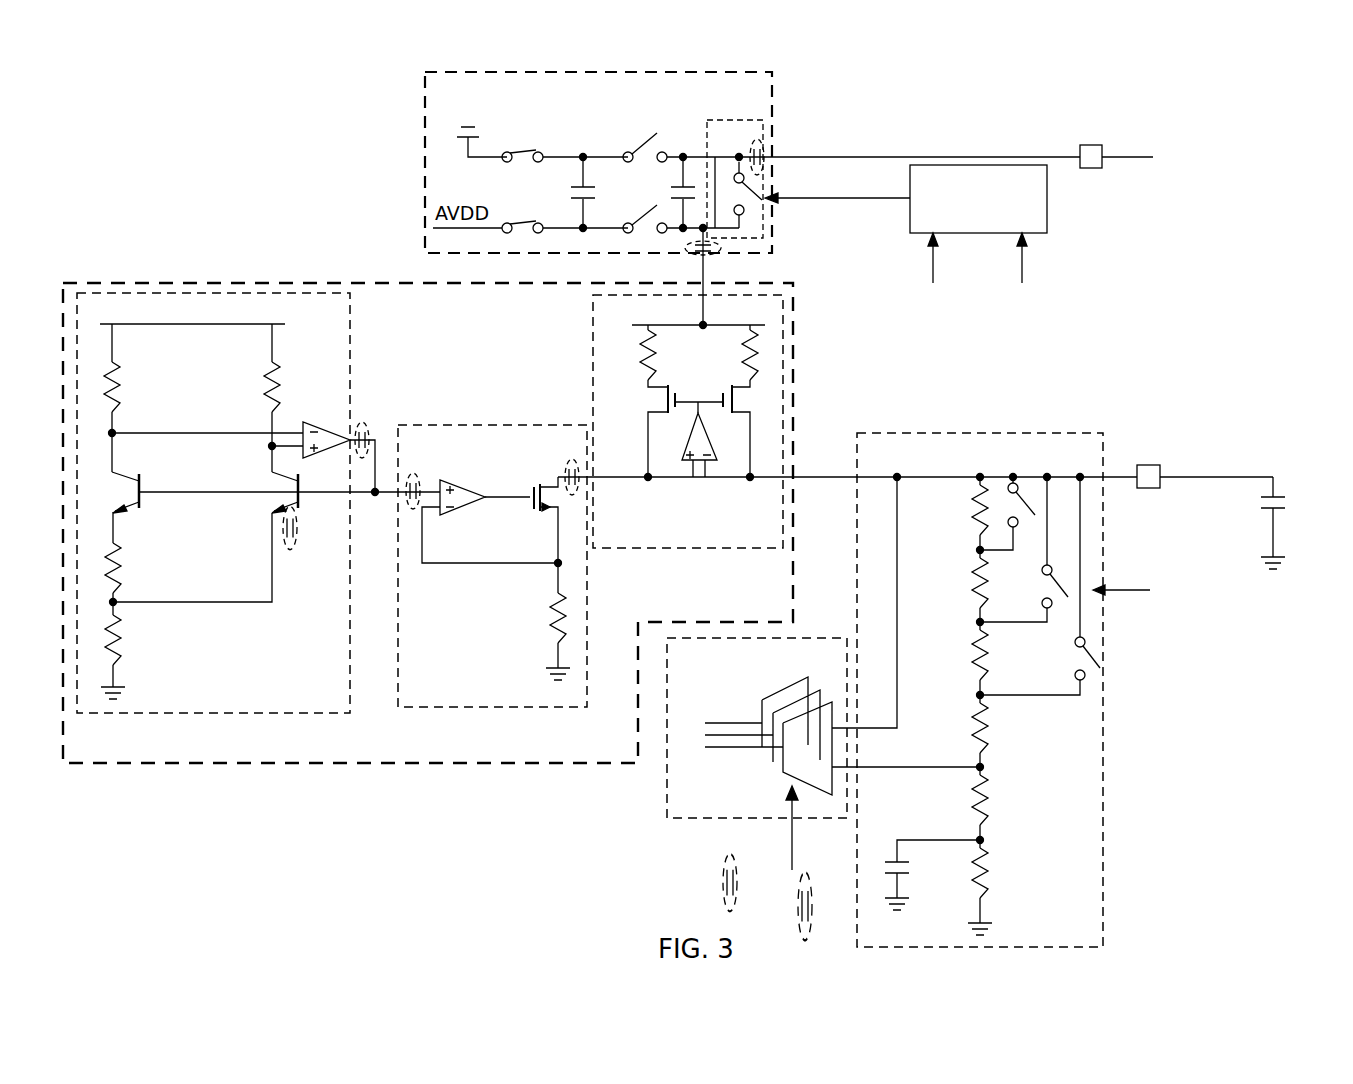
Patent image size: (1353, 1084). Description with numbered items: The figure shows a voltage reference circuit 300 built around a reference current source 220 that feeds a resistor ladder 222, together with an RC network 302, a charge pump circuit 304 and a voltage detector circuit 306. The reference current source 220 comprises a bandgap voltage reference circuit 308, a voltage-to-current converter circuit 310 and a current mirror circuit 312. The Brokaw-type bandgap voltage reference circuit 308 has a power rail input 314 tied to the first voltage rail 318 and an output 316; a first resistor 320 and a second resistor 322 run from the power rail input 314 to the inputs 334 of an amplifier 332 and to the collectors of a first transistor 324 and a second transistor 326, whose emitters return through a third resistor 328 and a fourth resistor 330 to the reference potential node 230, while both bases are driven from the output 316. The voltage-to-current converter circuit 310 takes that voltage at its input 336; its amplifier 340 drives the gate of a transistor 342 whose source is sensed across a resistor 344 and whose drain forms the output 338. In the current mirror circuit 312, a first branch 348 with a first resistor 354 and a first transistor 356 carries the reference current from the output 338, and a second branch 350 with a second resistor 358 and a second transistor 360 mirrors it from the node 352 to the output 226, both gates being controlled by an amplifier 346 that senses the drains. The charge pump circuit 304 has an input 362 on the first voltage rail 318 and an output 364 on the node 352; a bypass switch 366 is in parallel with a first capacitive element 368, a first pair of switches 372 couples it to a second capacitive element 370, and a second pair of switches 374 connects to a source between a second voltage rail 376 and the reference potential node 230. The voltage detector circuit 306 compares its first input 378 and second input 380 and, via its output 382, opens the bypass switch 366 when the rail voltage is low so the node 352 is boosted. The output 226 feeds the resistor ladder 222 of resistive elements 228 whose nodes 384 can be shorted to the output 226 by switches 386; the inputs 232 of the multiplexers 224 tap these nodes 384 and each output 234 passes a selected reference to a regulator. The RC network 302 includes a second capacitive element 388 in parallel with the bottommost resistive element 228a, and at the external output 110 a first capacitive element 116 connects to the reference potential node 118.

The voltage reference circuit 300 is at (289, 99).
The charge pump circuit 304 is at (470, 72).
The reference potential node 230 is at (465, 150).
The second pair of switches 374 is at (527, 153).
The first pair of switches 372 is at (658, 133).
The second voltage rail 376 is at (488, 231).
The second capacitive element 370 is at (578, 204).
The first capacitive element 368 is at (678, 192).
The bypass switch 366 is at (770, 128).
The input of the charge pump circuit 362 is at (762, 154).
The output of the charge pump circuit 364 is at (712, 253).
The first voltage rail 318 is at (1086, 145).
The voltage detector circuit 306 is at (1047, 200).
The D_CP_EN signal 382 is at (860, 200).
The second input of the voltage detector circuit 380 is at (930, 262).
The first input of the voltage detector circuit 378 is at (1025, 262).
The reference current source 220 is at (210, 283).
The bandgap voltage reference circuit 308 is at (318, 293).
The power rail input 314 is at (245, 324).
The first resistor 320 is at (122, 390).
The second resistor 322 is at (265, 366).
The inputs of the amplifier 334 is at (291, 418).
The amplifier 332 is at (363, 422).
The first transistor 324 is at (130, 478).
The second transistor 326 is at (285, 512).
The third resistor 328 is at (122, 556).
The fourth resistor 330 is at (122, 637).
The output of the bandgap voltage reference circuit 316 is at (378, 440).
The voltage-to-current converter circuit 310 is at (545, 425).
The input of the voltage-to-current converter circuit 336 is at (415, 475).
The amplifier 340 is at (462, 512).
The transistor 342 is at (541, 470).
The output of the voltage-to-current converter circuit 338 is at (572, 460).
The resistor 344 is at (553, 601).
The current mirror circuit 312 is at (700, 548).
The first branch 348 is at (597, 315).
The node 352 is at (706, 323).
The first resistor 354 is at (645, 352).
The second branch 350 is at (765, 347).
The second resistor 358 is at (762, 362).
The first transistor 356 is at (665, 395).
The second transistor 360 is at (731, 396).
The amplifier 346 is at (690, 440).
The output of the reference current source 226 is at (808, 440).
The multiplexers 224 is at (705, 820).
The output of the multiplexer 234 is at (738, 760).
The inputs of the multiplexers 232 is at (884, 750).
The RC network 302 is at (1065, 433).
The resistive elements 228 is at (975, 499).
The nodes 384 is at (978, 550).
The switches 386 is at (1090, 640).
The second capacitive element 388 is at (884, 850).
The resistive element 228a is at (985, 856).
The resistor ladder 222 is at (997, 904).
The external output 110 is at (1146, 465).
The first capacitive element 116 is at (1282, 497).
The reference potential node 118 is at (1282, 557).